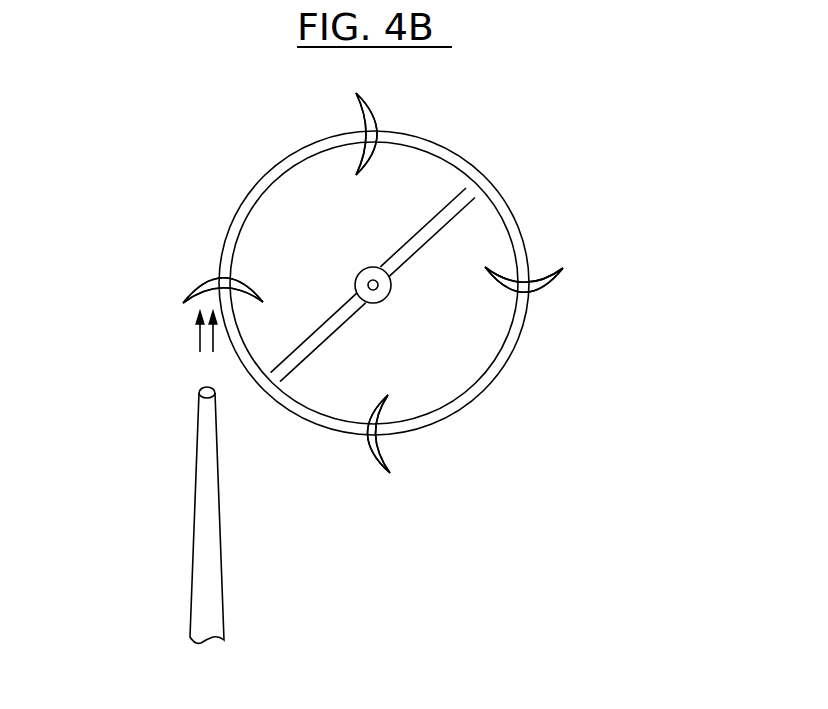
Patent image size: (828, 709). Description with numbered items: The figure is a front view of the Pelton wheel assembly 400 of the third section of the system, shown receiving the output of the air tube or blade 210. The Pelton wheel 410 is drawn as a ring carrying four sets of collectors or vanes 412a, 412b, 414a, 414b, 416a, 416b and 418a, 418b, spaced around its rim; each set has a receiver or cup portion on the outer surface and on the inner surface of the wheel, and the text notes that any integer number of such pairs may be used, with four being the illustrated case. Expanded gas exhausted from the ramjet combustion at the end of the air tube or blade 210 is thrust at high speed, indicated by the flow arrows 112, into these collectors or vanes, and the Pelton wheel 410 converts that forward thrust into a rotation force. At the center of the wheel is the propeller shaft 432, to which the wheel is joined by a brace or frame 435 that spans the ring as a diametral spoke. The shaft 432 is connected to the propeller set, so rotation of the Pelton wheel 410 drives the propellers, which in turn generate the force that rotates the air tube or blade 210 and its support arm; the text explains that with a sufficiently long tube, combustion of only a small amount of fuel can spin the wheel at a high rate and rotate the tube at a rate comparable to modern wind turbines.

The Pelton wheel assembly 400 is at (518, 130).
The Pelton wheel 410 is at (478, 400).
The shaft 432 is at (360, 268).
The brace or frame 435 is at (327, 330).
The collector or vane 418a is at (363, 112).
The collector or vane 418b is at (382, 152).
The collector or vane 412a is at (198, 280).
The collector or vane 412b is at (247, 275).
The collector or vane 416a is at (545, 275).
The collector or vane 416b is at (485, 268).
The collector or vane 414a is at (364, 455).
The collector or vane 414b is at (391, 403).
The airflow direction arrows 112 is at (203, 361).
The air tube or blade 210 is at (196, 472).